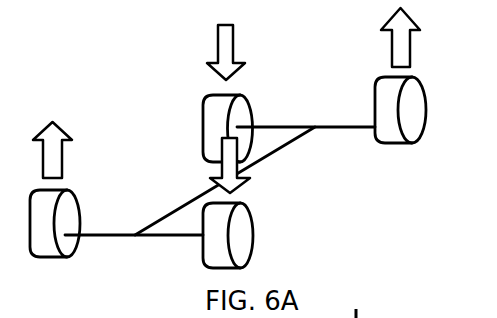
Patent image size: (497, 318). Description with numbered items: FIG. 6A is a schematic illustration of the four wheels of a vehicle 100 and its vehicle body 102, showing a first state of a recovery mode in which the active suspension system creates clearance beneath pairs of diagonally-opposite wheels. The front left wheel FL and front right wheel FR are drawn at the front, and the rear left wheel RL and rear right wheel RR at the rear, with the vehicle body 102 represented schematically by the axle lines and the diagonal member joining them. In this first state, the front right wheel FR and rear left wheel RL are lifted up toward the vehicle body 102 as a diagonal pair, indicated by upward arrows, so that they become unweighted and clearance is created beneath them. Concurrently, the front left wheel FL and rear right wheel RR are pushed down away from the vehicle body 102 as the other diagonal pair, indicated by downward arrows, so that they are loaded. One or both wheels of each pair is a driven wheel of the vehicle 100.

The vehicle 100 is at (245, 138).
The vehicle body 102 is at (275, 152).
The front left wheel FL is at (222, 95).
The front right wheel FR is at (412, 77).
The rear left wheel RL is at (62, 190).
The rear right wheel RR is at (240, 202).